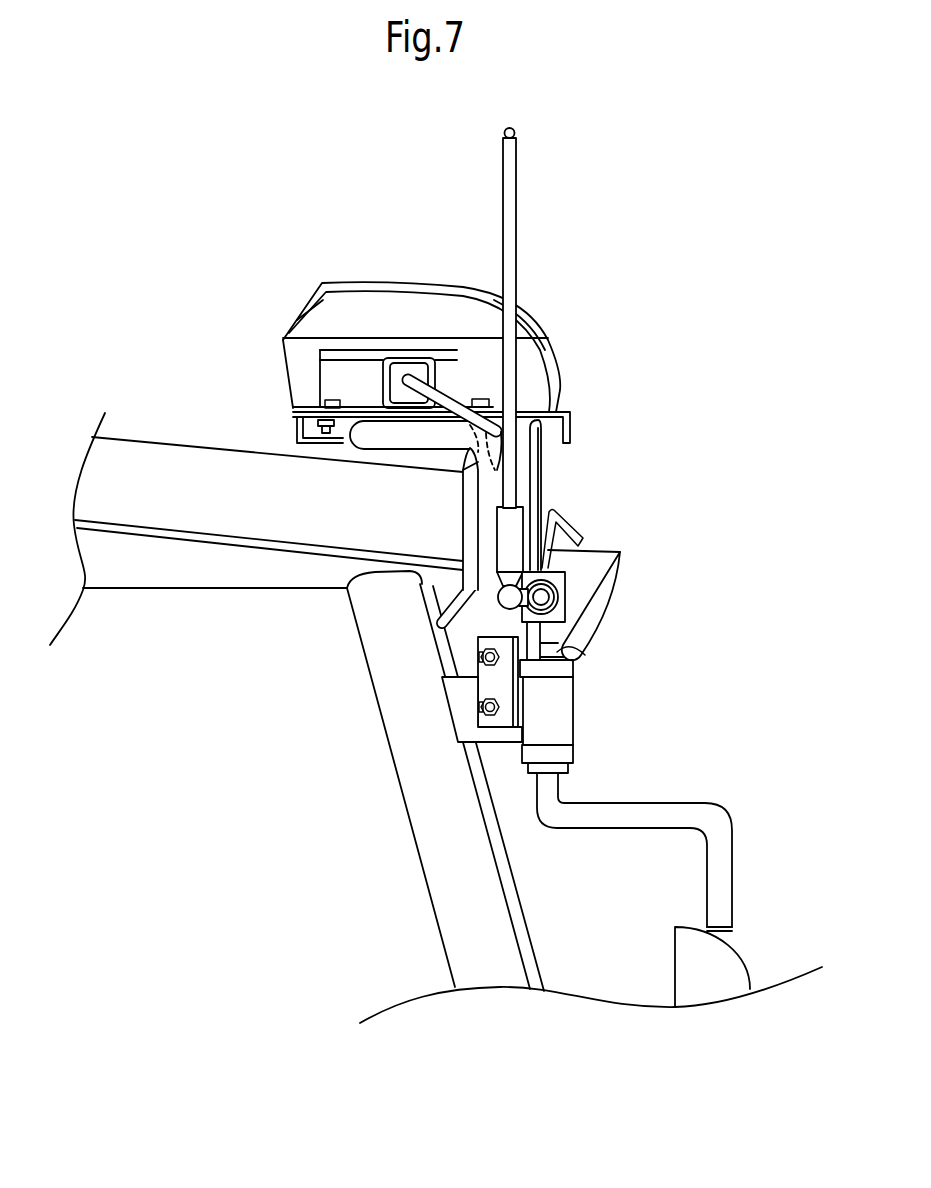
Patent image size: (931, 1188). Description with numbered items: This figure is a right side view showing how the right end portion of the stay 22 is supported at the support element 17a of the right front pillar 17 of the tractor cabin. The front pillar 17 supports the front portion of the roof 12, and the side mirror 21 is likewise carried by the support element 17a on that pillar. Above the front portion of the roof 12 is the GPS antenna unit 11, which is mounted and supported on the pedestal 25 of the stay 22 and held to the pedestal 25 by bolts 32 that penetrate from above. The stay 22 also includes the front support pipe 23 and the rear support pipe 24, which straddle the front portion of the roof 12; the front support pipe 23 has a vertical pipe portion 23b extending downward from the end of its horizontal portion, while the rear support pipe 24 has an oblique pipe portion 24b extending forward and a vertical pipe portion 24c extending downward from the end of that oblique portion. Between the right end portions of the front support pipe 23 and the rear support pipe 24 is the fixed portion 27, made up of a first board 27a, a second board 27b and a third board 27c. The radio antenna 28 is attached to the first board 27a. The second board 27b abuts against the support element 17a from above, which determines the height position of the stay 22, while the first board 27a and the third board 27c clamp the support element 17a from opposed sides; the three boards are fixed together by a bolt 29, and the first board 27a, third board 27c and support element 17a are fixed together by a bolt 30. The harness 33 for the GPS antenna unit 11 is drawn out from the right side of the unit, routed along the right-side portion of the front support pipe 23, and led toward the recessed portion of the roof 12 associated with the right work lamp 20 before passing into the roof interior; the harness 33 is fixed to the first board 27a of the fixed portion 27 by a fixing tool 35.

The GPS antenna unit 11 is at (384, 307).
The roof 12 is at (157, 453).
The front pillar 17 is at (465, 887).
The support element 17a is at (457, 707).
The work lamp 20 is at (588, 618).
The side mirror 21 is at (733, 967).
The stay 22 is at (548, 470).
The front support pipe 23 is at (540, 455).
The vertical pipe portion 23b is at (530, 497).
The rear support pipe 24 is at (347, 441).
The oblique pipe portion 24b is at (397, 440).
The vertical pipe portion 24c is at (490, 497).
The pedestal 25 is at (573, 436).
The fixed portion 27 is at (520, 705).
The first board 27a is at (567, 573).
The second board 27b is at (570, 648).
The third board 27c is at (487, 683).
The radio antenna 28 is at (511, 220).
The bolt 29 is at (483, 658).
The bolt 30 is at (480, 710).
The bolt 32 is at (493, 407).
The harness 33 is at (467, 533).
The fixing tool 35 is at (420, 590).